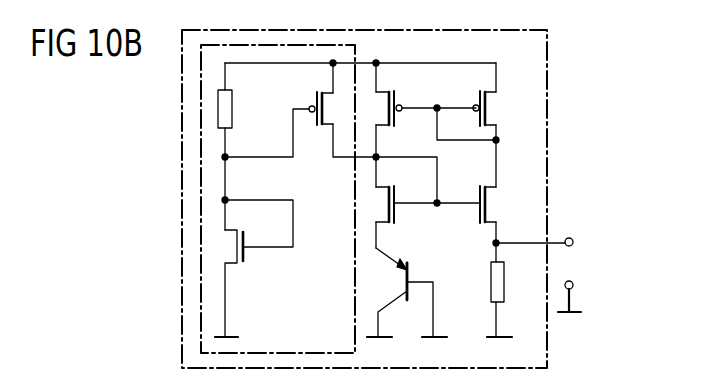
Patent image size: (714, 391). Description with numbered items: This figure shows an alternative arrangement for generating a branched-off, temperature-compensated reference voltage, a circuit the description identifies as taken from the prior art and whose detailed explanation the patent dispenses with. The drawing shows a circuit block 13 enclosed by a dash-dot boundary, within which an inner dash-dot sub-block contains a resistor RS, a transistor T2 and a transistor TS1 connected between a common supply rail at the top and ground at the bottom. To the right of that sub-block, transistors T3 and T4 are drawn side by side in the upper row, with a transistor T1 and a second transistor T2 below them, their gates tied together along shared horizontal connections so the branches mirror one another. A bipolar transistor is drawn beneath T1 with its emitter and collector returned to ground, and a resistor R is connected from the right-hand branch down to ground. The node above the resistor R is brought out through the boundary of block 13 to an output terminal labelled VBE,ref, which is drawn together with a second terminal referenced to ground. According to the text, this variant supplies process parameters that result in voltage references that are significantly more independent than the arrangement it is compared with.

The reference voltage circuit 13 is at (548, 114).
The resistor RS is at (233, 108).
The transistor T2 is at (311, 102).
The transistor T3 is at (402, 100).
The transistor T4 is at (492, 108).
The transistor T1 is at (398, 213).
The transistor TS1 is at (247, 256).
The resistor R is at (490, 285).
The reference base-emitter voltage output VBE,ref is at (603, 275).